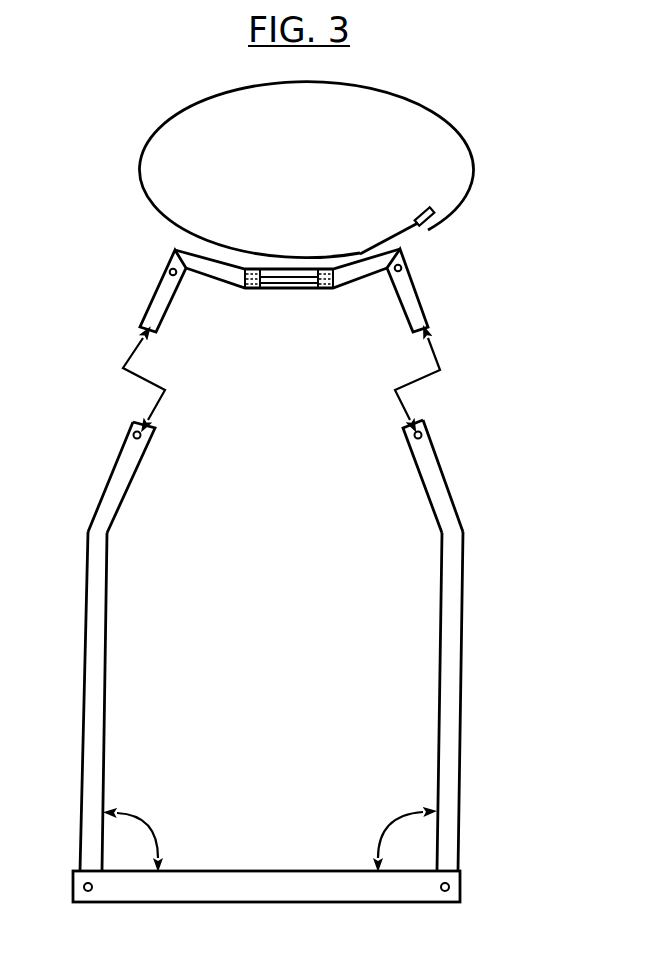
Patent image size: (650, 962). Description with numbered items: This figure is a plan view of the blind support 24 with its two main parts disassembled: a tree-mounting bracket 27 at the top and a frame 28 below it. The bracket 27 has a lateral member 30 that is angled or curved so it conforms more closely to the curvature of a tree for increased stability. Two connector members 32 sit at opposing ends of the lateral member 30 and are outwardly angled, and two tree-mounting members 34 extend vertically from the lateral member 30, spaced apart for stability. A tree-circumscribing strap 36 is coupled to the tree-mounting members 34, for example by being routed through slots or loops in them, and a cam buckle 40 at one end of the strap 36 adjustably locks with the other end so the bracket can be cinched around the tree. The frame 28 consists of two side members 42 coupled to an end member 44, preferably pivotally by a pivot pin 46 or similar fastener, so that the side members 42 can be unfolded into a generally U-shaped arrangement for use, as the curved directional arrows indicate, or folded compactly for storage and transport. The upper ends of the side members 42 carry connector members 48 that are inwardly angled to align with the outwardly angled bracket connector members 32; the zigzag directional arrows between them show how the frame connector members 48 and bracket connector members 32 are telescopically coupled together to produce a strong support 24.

The blind support 24 is at (517, 260).
The tree-mounting bracket 27 is at (432, 292).
The frame 28 is at (465, 632).
The lateral member 30 is at (291, 291).
The connector members 32 is at (164, 317).
The tree-mounting members 34 is at (251, 291).
The tree-circumscribing strap 36 is at (452, 113).
The cam buckle 40 is at (420, 214).
The side members 42 is at (83, 723).
The end member 44 is at (342, 902).
The pivot pin 46 is at (88, 892).
The connector members 48 is at (136, 470).